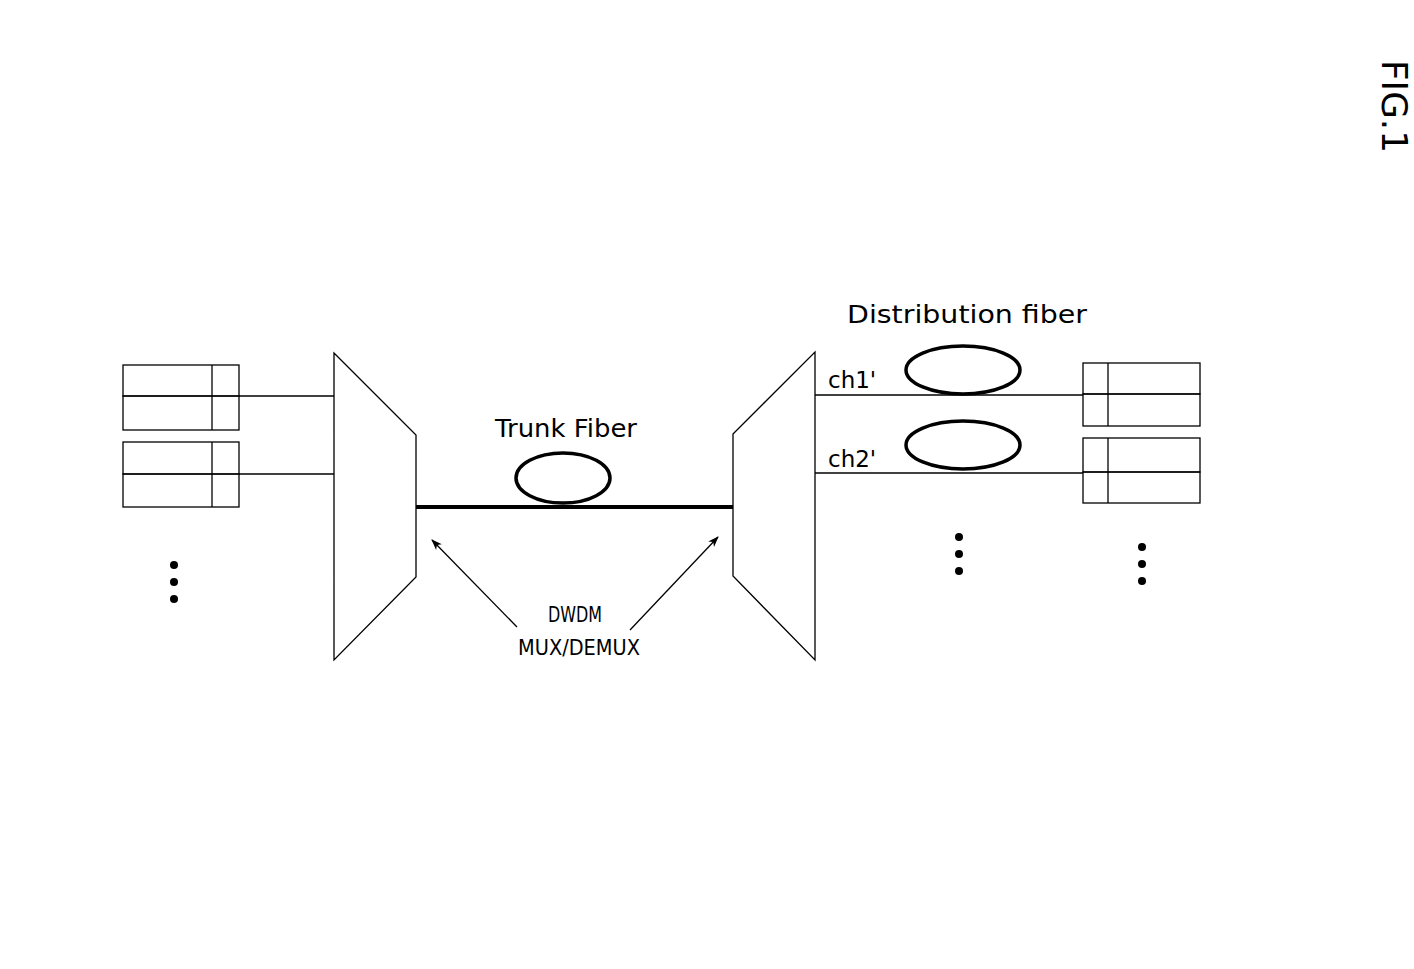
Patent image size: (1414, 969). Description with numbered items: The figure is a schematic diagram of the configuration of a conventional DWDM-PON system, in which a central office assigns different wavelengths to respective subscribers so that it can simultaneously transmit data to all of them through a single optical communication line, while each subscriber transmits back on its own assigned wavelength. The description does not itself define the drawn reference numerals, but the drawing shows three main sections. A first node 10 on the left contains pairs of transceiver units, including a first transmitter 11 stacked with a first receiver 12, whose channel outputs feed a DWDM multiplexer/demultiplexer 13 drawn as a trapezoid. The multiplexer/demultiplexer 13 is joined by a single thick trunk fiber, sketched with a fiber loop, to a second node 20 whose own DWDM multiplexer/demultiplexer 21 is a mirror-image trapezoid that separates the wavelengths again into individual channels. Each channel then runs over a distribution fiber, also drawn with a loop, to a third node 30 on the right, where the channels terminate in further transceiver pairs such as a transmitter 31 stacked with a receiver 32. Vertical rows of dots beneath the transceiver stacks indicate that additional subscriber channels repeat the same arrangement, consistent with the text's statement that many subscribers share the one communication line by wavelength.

The first node (transmitting side) 10 is at (259, 537).
The transmitter TX1 11 is at (123, 386).
The receiver RX1' 12 is at (123, 410).
The DWDM multiplexer/demultiplexer 13 is at (378, 396).
The second node 20 is at (757, 548).
The DWDM multiplexer/demultiplexer 21 is at (773, 392).
The third node (remote side) 30 is at (1138, 554).
The transmitter TX1' 31 is at (1200, 380).
The receiver RX1 32 is at (1200, 405).